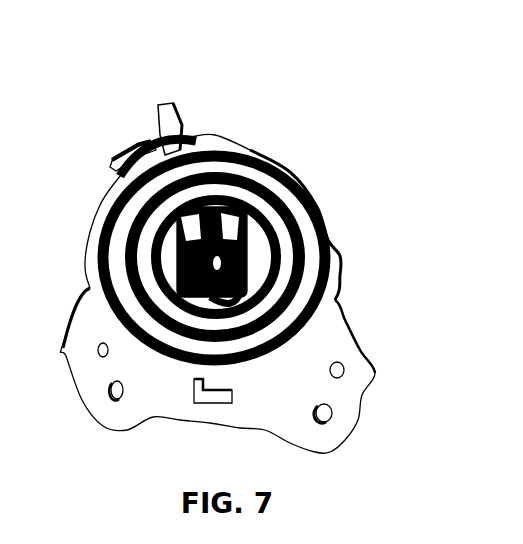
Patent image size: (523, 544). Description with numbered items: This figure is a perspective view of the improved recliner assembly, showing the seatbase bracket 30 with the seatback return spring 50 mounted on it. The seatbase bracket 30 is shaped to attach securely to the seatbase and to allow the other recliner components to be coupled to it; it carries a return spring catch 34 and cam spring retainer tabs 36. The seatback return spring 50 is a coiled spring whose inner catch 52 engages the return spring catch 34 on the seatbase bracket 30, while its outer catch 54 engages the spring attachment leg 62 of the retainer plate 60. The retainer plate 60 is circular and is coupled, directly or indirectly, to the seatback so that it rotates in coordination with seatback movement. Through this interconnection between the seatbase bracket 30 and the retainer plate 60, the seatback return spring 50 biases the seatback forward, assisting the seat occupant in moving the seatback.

The seatbase bracket 30 is at (310, 350).
The return spring catch 34 is at (187, 300).
The cam spring retainer tabs 36 is at (228, 205).
The seatback return spring 50 is at (140, 330).
The inner catch 52 is at (208, 300).
The outer catch 54 is at (177, 115).
The retainer plate 60 is at (120, 160).
The spring attachment leg 62 is at (148, 143).